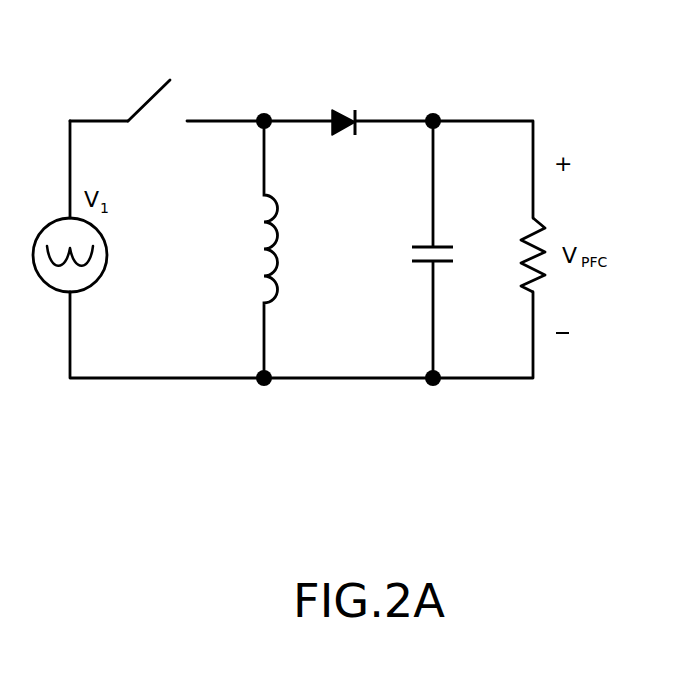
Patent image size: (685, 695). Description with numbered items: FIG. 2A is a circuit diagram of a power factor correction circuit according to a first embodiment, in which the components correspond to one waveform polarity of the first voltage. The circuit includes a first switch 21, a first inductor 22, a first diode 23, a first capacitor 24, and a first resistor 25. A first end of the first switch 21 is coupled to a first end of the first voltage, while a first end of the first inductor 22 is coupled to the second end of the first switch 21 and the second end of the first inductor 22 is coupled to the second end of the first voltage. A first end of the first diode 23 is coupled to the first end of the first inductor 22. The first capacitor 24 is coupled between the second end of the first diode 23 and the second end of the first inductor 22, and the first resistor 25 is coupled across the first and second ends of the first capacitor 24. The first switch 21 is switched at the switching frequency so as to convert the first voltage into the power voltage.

The first switch 21 is at (178, 105).
The first inductor 22 is at (250, 290).
The first diode 23 is at (365, 112).
The first capacitor 24 is at (418, 278).
The first resistor 25 is at (515, 290).